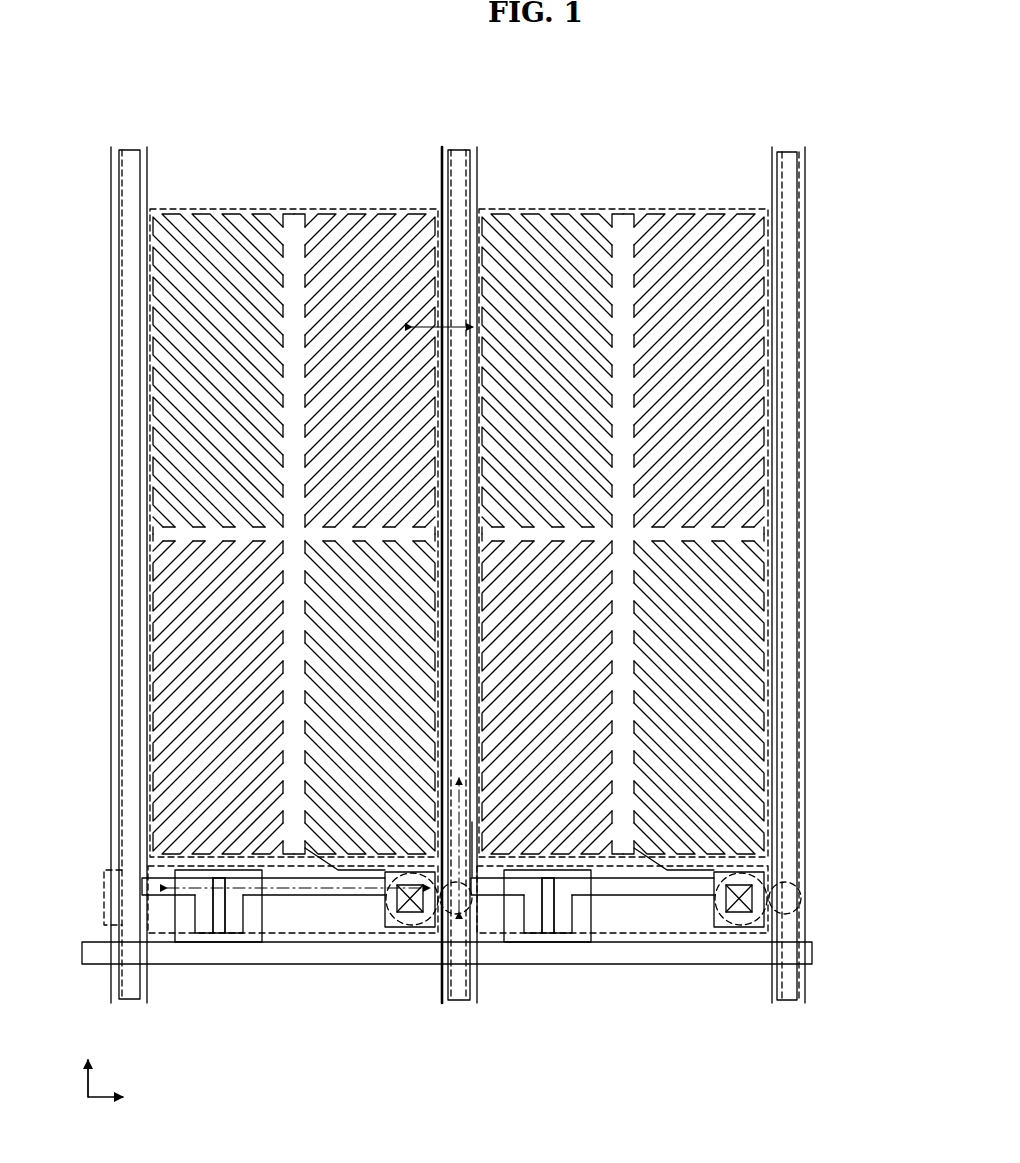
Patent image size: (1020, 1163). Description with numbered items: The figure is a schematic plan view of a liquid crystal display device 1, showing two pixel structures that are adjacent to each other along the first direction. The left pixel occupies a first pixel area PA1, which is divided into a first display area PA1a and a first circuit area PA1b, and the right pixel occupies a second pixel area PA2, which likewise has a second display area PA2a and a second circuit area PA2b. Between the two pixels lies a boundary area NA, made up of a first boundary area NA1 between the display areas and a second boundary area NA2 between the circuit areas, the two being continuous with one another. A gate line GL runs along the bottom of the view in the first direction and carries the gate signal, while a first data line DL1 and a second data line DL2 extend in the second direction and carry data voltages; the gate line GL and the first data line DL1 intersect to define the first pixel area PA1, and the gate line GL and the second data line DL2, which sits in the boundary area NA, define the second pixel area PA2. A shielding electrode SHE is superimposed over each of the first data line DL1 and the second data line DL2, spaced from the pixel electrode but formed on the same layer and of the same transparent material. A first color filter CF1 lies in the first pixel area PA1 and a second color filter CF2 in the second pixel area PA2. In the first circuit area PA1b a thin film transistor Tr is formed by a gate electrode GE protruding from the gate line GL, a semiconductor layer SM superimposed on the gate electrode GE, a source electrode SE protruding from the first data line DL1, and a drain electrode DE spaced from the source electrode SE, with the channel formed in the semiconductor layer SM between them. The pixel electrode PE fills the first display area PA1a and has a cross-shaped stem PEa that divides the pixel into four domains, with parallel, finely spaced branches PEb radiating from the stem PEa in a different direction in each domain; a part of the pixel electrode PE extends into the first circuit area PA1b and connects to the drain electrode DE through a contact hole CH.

The liquid crystal display device 1 is at (203, 90).
The first data line DL1 is at (143, 148).
The second data line DL2 is at (473, 148).
The shielding electrode SHE is at (146, 198).
The first color filter CF1 is at (122, 758).
The second color filter CF2 is at (790, 170).
The pixel electrode PE is at (73, 443).
The stem PEa is at (295, 557).
The branches PEb is at (165, 450).
The first pixel area PA1 is at (63, 812).
The first display area PA1a is at (150, 800).
The first circuit area PA1b is at (148, 866).
The second pixel area PA2 is at (858, 812).
The second display area PA2a is at (766, 800).
The second circuit area PA2b is at (768, 866).
The gate line GL is at (93, 962).
The thin film transistor Tr is at (263, 951).
The source electrode SE is at (190, 938).
The semiconductor layer SM is at (215, 933).
The drain electrode DE is at (233, 938).
The gate electrode GE is at (172, 1002).
The contact hole CH is at (408, 910).
The boundary area NA is at (487, 940).
The first boundary area NA1 is at (468, 822).
The second boundary area NA2 is at (470, 935).